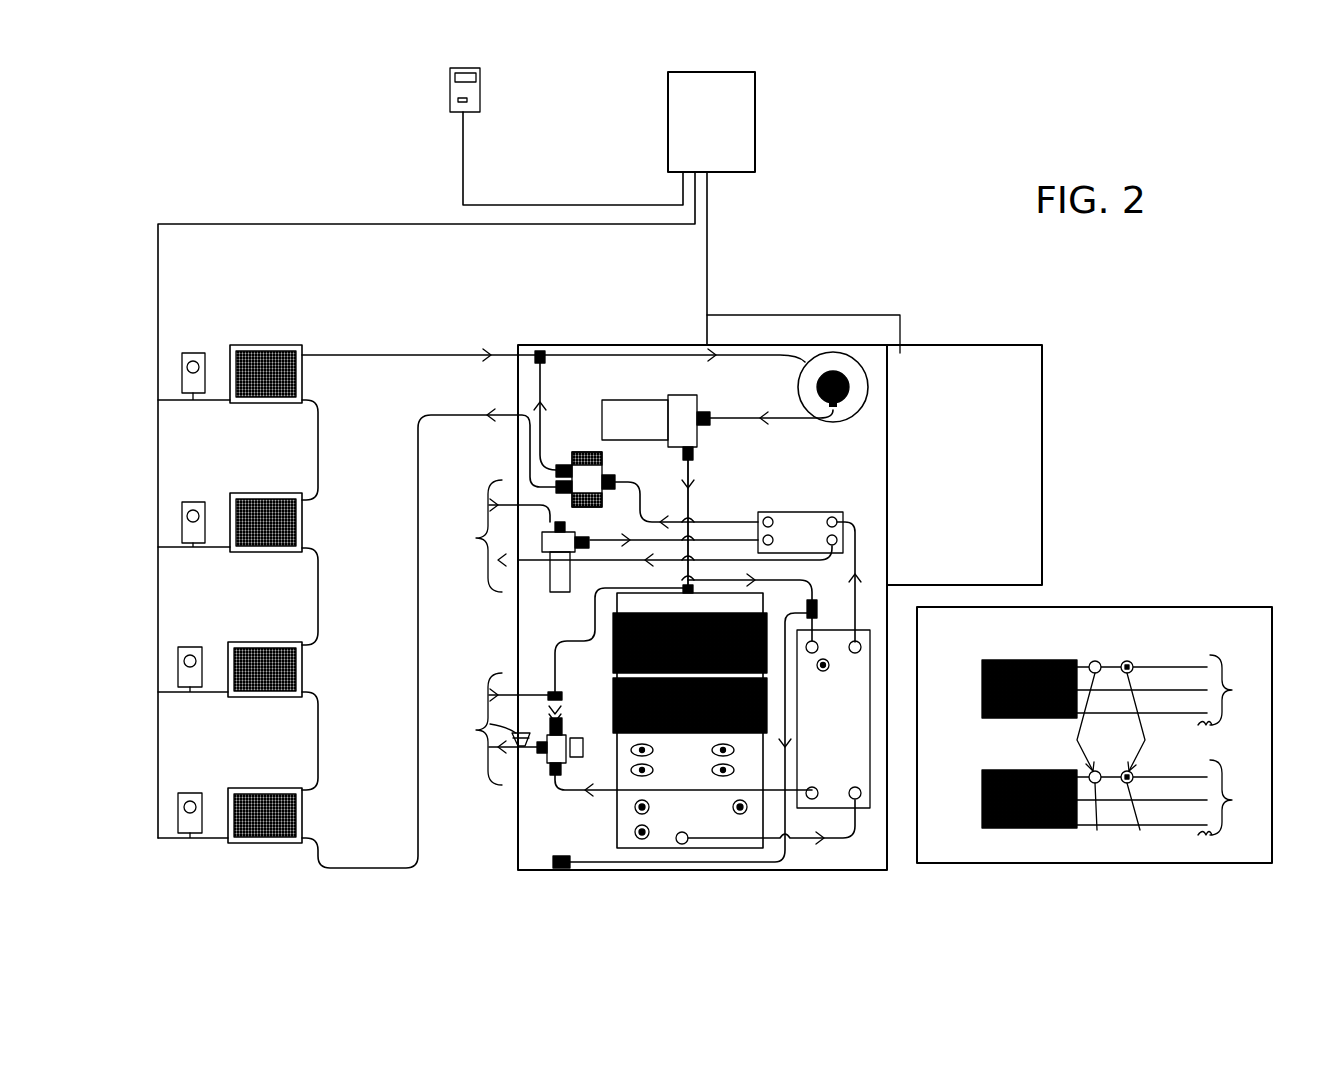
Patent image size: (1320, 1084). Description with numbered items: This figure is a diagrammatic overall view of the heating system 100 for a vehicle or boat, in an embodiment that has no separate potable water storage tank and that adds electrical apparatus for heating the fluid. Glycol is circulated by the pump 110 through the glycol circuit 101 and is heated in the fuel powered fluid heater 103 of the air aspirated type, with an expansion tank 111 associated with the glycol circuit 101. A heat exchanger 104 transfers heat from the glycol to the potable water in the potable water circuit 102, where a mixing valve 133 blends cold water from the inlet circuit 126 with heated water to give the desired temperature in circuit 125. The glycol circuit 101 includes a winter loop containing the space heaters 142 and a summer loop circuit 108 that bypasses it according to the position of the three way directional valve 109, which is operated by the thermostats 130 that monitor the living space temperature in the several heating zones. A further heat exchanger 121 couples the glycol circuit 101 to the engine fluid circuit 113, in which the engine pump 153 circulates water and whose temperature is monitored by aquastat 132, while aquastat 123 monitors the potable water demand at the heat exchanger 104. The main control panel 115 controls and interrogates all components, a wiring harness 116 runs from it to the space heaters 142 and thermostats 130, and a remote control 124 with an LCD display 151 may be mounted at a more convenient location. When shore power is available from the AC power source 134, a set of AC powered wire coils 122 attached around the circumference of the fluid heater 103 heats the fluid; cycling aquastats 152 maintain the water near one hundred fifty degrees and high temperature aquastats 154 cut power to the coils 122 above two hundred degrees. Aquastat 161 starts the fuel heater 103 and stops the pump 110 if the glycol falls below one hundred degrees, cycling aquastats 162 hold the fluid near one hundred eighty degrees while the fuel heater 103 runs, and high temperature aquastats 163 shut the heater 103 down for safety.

The heating system 100 is at (1125, 481).
The glycol circuit 101 is at (690, 504).
The potable water circuit 102 is at (590, 622).
The fuel powered fluid heater 103 is at (668, 850).
The heat exchanger 104 is at (872, 770).
The summer loop circuit 108 is at (540, 381).
The three way directional valve 109 is at (603, 460).
The pump 110 is at (625, 398).
The expansion tank 111 is at (842, 352).
The engine fluid circuit 113 is at (485, 506).
The main control panel 115 is at (755, 122).
The wiring harness 116 is at (624, 228).
The heat exchanger 121 is at (757, 513).
The AC powered wire coils 122 is at (1002, 660).
The aquastat 123 is at (824, 657).
The remote control 124 is at (450, 98).
The circuit 125 is at (490, 724).
The inlet circuit 126 is at (485, 693).
The thermostats 130 is at (205, 378).
The aquastat 132 is at (817, 510).
The mixing valve 133 is at (547, 763).
The AC power source 134 is at (1252, 638).
The space heaters 142 is at (305, 378).
The LCD display 151 is at (450, 75).
The cycling aquastats 152 is at (1095, 661).
The engine pump 153 is at (550, 585).
The high temperature aquastats 154 is at (1128, 661).
The aquastat 161 is at (740, 815).
The cycling aquastats 162 is at (634, 808).
The high temperature aquastats 163 is at (640, 840).